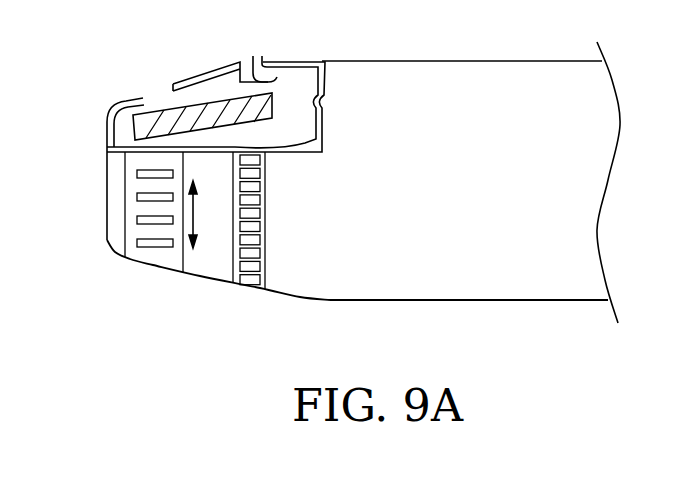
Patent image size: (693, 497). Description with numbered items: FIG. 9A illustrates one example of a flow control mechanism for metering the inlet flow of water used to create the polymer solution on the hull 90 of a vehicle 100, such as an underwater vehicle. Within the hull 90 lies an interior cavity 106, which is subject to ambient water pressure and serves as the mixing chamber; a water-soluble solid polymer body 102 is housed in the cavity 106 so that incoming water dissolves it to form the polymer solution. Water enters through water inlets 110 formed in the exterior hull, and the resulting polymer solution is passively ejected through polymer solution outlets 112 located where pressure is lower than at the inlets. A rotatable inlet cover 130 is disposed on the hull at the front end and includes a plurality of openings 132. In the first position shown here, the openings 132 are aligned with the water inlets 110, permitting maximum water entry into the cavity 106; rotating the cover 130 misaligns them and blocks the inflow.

The hull 90 is at (553, 66).
The vehicle 100 is at (545, 308).
The water-soluble solid polymer body 102 is at (197, 112).
The interior cavity 106 is at (302, 117).
The water inlet 110 is at (162, 92).
The polymer solution outlet 112 is at (258, 52).
The rotatable inlet cover 130 is at (153, 271).
The openings 132 is at (140, 240).